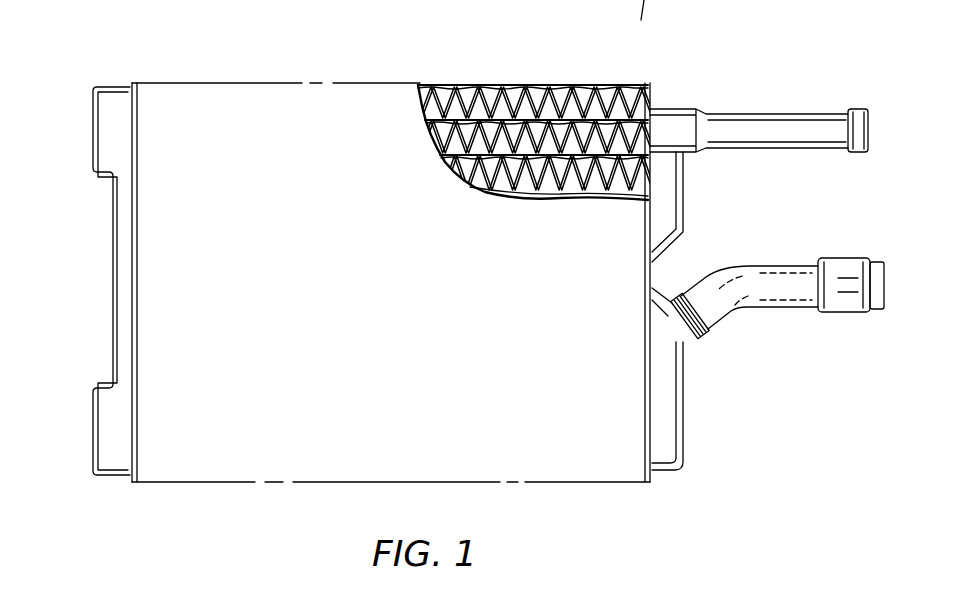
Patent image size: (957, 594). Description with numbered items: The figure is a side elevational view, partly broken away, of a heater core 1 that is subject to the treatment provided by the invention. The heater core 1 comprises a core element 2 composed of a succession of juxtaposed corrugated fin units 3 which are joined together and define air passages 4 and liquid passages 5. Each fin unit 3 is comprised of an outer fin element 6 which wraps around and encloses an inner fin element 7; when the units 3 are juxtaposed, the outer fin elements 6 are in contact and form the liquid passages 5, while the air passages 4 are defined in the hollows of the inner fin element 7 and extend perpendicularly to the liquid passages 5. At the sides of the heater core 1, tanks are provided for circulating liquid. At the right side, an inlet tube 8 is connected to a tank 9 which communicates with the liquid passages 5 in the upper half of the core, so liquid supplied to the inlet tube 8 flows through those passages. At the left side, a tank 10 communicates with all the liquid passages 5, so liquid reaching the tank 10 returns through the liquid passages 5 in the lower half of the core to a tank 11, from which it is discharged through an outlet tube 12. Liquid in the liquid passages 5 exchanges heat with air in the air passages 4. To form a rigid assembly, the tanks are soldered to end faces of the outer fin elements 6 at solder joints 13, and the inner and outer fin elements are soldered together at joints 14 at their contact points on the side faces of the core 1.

The heater core 1 is at (225, 78).
The core element 2 is at (543, 293).
The corrugated fin unit 3 is at (618, 112).
The air passage 4 is at (432, 86).
The liquid passage 5 is at (485, 196).
The outer fin element 6 is at (551, 95).
The inner fin element 7 is at (505, 97).
The inlet tube 8 is at (797, 130).
The tank 9 is at (660, 218).
The tank 10 is at (124, 306).
The tank 11 is at (666, 440).
The outlet tube 12 is at (788, 292).
The solder joint 13 is at (134, 405).
The solder joint 14 is at (580, 86).